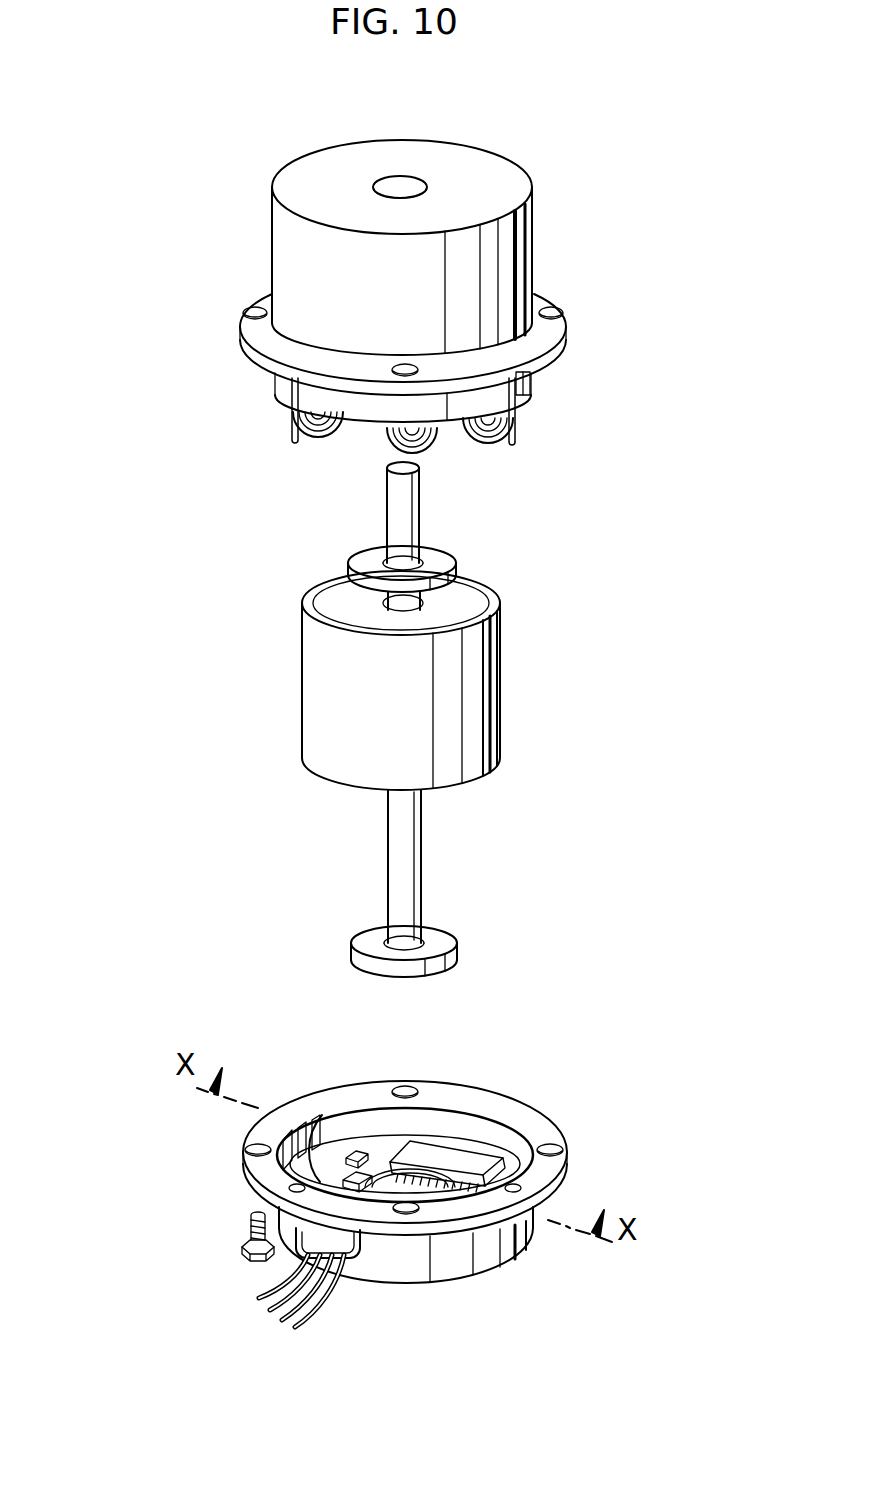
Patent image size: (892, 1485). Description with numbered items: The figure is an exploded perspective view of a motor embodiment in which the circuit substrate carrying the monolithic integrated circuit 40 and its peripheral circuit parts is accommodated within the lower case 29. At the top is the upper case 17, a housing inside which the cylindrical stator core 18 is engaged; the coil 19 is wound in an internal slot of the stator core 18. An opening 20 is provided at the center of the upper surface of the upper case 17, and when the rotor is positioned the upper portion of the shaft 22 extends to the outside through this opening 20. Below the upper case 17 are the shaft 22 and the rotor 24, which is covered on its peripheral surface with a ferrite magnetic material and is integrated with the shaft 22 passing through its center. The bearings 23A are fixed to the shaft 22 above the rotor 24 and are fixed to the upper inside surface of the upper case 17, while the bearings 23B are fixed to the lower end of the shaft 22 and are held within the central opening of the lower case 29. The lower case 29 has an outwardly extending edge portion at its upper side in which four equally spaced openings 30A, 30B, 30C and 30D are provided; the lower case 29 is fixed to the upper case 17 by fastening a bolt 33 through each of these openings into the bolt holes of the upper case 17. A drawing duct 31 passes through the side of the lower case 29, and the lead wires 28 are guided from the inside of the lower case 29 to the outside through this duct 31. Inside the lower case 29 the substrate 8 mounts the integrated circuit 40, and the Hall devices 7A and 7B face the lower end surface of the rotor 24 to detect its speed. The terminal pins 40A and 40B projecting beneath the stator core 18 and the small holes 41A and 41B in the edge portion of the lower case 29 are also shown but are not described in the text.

The upper case 17 is at (512, 238).
The stator core 18 is at (524, 380).
The coil 19 is at (322, 445).
The opening 20 is at (402, 184).
The shaft 22 is at (417, 500).
The bearings 23A is at (440, 560).
The bearings 23B is at (356, 958).
The rotor 24 is at (496, 656).
The lead wires 28 is at (306, 1306).
The lower case 29 is at (510, 1256).
The opening 30A is at (246, 1150).
The opening 30B is at (408, 1216).
The opening 30C is at (562, 1150).
The opening 30D is at (405, 1088).
The drawing duct 31 is at (356, 1262).
The bolt 33 is at (245, 1255).
The monolithic integrated circuit 40 is at (465, 1175).
The terminal pin 40A is at (292, 438).
The terminal pin 40B is at (515, 438).
The positioning hole 41A is at (292, 1191).
The positioning hole 41B is at (520, 1189).
The Hall device 7A is at (357, 1158).
The Hall device 7B is at (342, 1181).
The circuit board 8 is at (343, 1185).